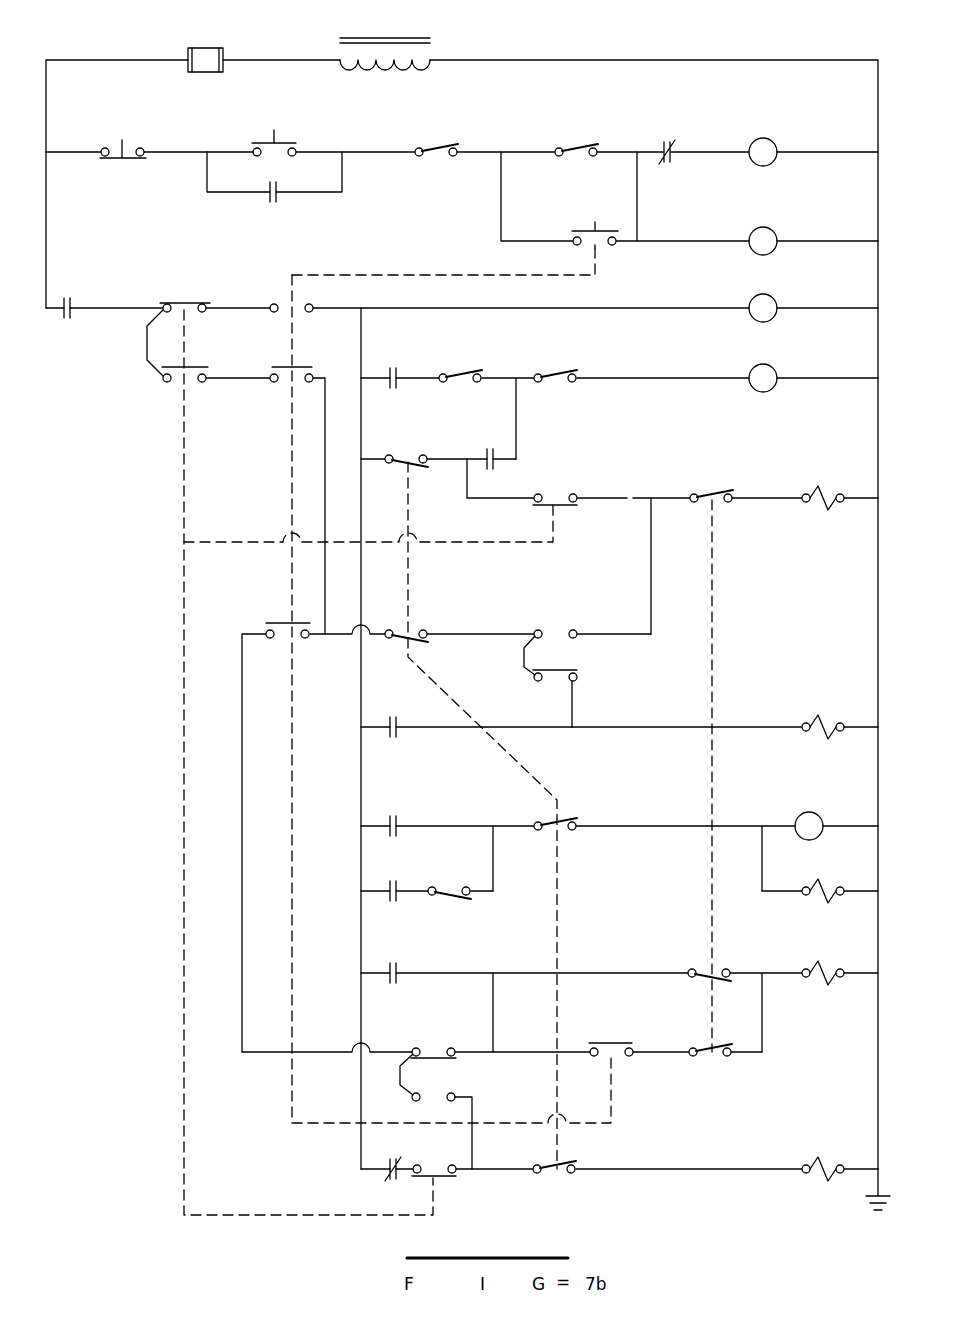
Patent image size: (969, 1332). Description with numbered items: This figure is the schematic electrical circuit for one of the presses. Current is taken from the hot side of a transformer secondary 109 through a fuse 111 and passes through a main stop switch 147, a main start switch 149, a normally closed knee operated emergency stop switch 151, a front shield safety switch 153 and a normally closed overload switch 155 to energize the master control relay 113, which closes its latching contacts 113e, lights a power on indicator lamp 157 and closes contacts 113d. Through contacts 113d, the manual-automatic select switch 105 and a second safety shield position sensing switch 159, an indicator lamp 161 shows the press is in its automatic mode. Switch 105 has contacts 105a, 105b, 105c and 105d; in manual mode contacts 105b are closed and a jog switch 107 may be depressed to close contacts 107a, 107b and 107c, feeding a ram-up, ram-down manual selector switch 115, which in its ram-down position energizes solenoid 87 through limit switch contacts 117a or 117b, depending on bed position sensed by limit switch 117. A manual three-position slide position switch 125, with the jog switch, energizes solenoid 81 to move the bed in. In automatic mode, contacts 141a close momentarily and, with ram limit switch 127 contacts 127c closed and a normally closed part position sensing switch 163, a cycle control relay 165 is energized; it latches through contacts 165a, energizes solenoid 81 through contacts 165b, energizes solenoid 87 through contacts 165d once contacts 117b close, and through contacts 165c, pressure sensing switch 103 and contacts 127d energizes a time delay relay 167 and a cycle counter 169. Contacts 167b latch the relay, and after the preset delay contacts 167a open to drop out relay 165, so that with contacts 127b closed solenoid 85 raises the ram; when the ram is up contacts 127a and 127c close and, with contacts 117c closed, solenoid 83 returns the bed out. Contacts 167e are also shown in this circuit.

The fuse 111 is at (210, 48).
The transformer secondary 109 is at (432, 55).
The main stop switch 147 is at (122, 148).
The main start switch 149 is at (280, 148).
The latching contacts 113e is at (278, 203).
The knee operated emergency stop switch 151 is at (438, 147).
The safety switch 153 is at (574, 147).
The overload switch 155 is at (667, 140).
The master control relay 113 is at (772, 143).
The power on indicator lamp 157 is at (772, 232).
The second safety shield position sensing switch 159 is at (460, 270).
The indicator lamp 161 is at (776, 304).
The cycle control relay 165 is at (776, 374).
The contacts of control relay 113d is at (68, 324).
The contacts of select switch 105a is at (178, 308).
The contacts of select switch 105b is at (192, 368).
The contacts of jog switch 107a is at (296, 368).
The manual-automatic select switch 105 is at (184, 498).
The jog switch 107 is at (292, 818).
The contacts of cycle control relay 165a is at (393, 376).
The time delay relay contact 167a is at (465, 378).
The part position sensing switch 163 is at (560, 378).
The contacts of limit switch 127c is at (405, 456).
The contacts of control relay 141a is at (490, 450).
The contacts of select switch 105c is at (558, 498).
The contacts of limit switch 117c is at (714, 492).
The solenoid 83 is at (828, 496).
The limit switch 117 is at (712, 650).
The contacts of jog switch 107b is at (282, 622).
The contacts of limit switch 127a is at (412, 634).
The limit switch 127 is at (522, 770).
The slide position switch 125 is at (556, 668).
The solenoid 81 is at (828, 725).
The contacts of cycle control relay 165b is at (395, 740).
The contacts of time delay relay 167b is at (395, 824).
The contacts of limit switch 127d is at (565, 826).
The time delay relay 167 is at (814, 814).
The cycle counter 169 is at (828, 890).
The contacts of cycle control relay 165c is at (395, 890).
The pressure sensing switch 103 is at (455, 903).
The contacts of cycle control relay 165d is at (395, 972).
The contacts of limit switch 117b is at (709, 966).
The solenoid 87 is at (828, 971).
The ram-up, ram-down manual selector switch 115 is at (436, 1052).
The contacts of jog switch 107c is at (611, 1043).
The limit switch contacts 117a is at (716, 1060).
The contact of relay 167 167e is at (390, 1182).
The contacts of select switch 105d is at (455, 1182).
The contacts of limit switch 127b is at (562, 1182).
The solenoid 85 is at (828, 1167).